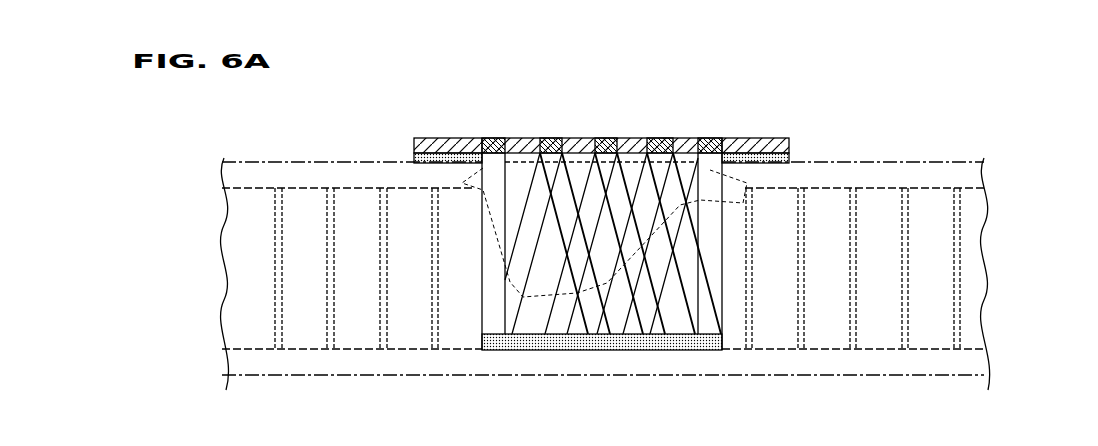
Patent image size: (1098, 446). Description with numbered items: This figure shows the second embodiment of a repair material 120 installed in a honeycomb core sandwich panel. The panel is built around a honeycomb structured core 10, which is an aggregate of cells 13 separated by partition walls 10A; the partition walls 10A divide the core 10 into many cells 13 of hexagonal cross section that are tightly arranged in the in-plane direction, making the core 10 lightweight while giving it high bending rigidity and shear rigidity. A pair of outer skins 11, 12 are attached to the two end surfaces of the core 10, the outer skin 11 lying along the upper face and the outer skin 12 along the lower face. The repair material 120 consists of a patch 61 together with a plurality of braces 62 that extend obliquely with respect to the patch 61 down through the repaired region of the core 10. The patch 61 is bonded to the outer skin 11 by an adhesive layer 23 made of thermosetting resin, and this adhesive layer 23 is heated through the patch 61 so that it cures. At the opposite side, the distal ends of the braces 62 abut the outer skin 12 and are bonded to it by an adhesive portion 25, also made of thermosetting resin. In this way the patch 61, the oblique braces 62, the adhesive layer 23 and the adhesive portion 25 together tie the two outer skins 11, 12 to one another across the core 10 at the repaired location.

The core 10 is at (960, 253).
The partition wall 10A is at (828, 322).
The outer skin 11 is at (872, 164).
The outer skin 12 is at (960, 378).
The cell 13 is at (420, 320).
The adhesive layer 23 is at (414, 158).
The adhesive portion 25 is at (653, 352).
The patch 61 is at (787, 140).
The brace 62 is at (537, 192).
The repair material 120 is at (603, 116).